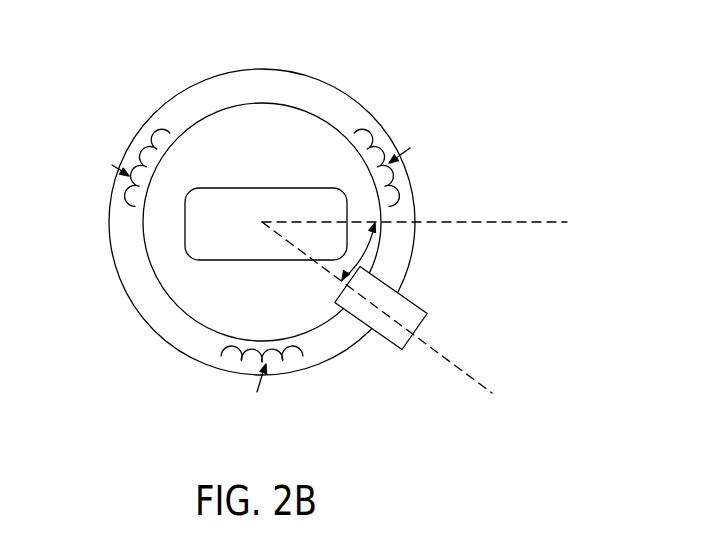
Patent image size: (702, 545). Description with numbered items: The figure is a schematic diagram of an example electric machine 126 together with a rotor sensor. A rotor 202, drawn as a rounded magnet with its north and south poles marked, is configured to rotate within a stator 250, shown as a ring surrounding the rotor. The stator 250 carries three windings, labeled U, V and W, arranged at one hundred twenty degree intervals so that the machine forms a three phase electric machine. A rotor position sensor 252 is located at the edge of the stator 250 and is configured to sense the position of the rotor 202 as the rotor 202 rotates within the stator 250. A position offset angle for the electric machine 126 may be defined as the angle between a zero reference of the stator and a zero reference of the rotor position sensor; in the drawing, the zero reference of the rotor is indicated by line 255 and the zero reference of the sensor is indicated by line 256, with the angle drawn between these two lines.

The electric machine 126 is at (112, 59).
The rotor 202 is at (198, 262).
The stator 250 is at (412, 185).
The rotor position sensor 252 is at (427, 313).
The line indicating zero reference of the rotor 255 is at (490, 223).
The line indicating zero reference of the sensor 256 is at (492, 393).